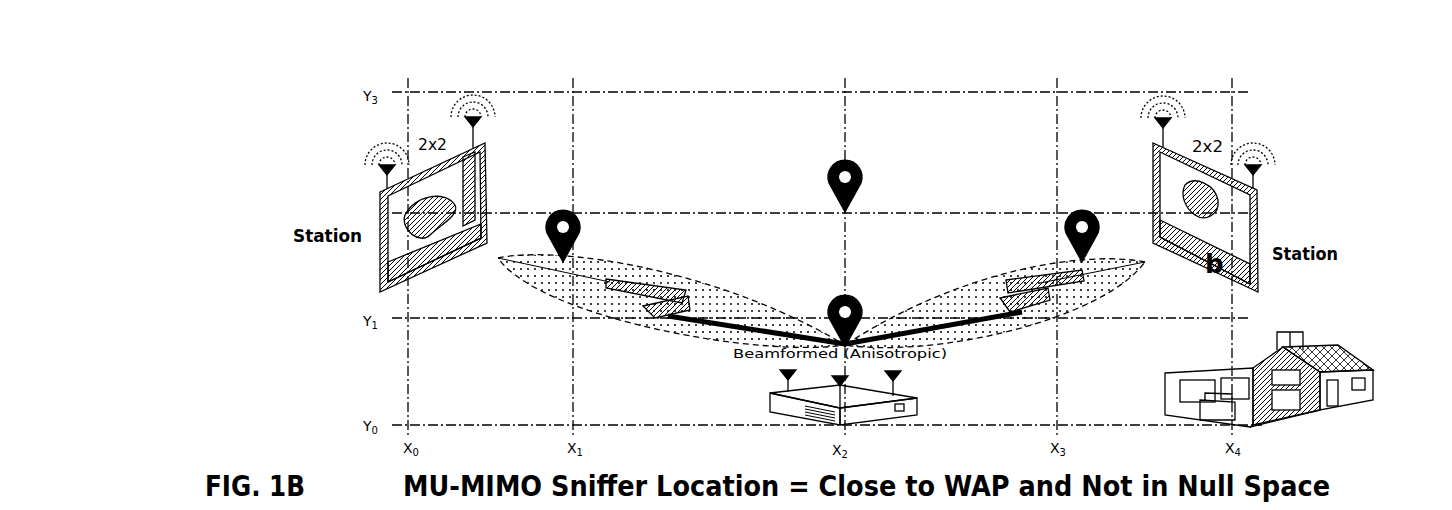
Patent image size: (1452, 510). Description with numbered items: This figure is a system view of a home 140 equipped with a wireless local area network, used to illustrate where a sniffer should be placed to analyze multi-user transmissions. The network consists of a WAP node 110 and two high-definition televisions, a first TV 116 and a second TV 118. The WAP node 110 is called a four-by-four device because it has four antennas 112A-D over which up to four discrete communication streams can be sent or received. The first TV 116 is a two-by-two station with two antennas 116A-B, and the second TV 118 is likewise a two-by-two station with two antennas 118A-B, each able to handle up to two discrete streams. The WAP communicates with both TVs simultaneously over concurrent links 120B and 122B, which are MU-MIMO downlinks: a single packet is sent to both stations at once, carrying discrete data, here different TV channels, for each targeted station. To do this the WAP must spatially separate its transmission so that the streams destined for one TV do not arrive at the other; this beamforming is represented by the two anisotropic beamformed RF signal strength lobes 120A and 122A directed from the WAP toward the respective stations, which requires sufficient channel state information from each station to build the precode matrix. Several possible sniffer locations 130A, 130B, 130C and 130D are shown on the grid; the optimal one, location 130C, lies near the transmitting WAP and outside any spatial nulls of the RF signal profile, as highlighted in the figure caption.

The WAP node 110 is at (917, 408).
The WAP antennas 112A-D is at (783, 373).
The HD TV 116 is at (485, 143).
The TV antennas 116A-B is at (380, 170).
The HD TV 118 is at (1153, 143).
The TV antennas 118A-B is at (1283, 178).
The anisotropic beamformed RF signal strength lobe 120A is at (658, 268).
The concurrent link 120B is at (648, 307).
The anisotropic beamformed RF signal strength lobe 122A is at (1016, 269).
The concurrent link 122B is at (1003, 312).
The sniffer location 130A is at (830, 168).
The sniffer location 130B is at (1064, 215).
The sniffer location 130C is at (830, 304).
The sniffer location 130D is at (578, 214).
The home 140 is at (1237, 370).